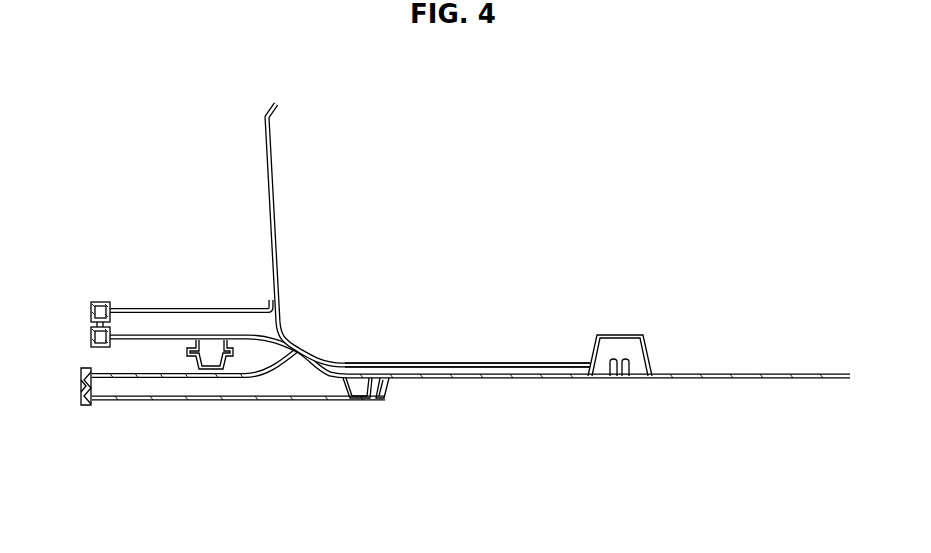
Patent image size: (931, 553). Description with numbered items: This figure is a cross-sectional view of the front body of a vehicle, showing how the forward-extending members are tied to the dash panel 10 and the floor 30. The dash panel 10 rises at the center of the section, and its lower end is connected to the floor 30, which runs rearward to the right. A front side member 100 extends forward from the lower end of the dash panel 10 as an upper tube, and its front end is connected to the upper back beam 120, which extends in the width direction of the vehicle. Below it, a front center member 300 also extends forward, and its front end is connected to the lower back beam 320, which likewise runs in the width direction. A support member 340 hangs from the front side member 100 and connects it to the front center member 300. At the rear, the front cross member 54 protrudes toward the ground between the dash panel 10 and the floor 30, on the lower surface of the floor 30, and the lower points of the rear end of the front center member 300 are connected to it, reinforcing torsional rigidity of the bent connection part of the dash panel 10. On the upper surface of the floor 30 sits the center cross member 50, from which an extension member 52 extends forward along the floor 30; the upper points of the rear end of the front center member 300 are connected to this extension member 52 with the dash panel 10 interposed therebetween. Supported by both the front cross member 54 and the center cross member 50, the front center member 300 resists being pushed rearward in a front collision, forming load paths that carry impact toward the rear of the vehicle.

The dash panel 10 is at (272, 197).
The floor 30 is at (768, 374).
The center cross member 50 is at (618, 335).
The extension members 52 is at (500, 363).
The front cross member 54 is at (360, 402).
The front side members 100 is at (203, 308).
The upper back beam 120 is at (98, 302).
The front center members 300 is at (297, 402).
The lower back beam 320 is at (83, 405).
The support members 340 is at (210, 368).